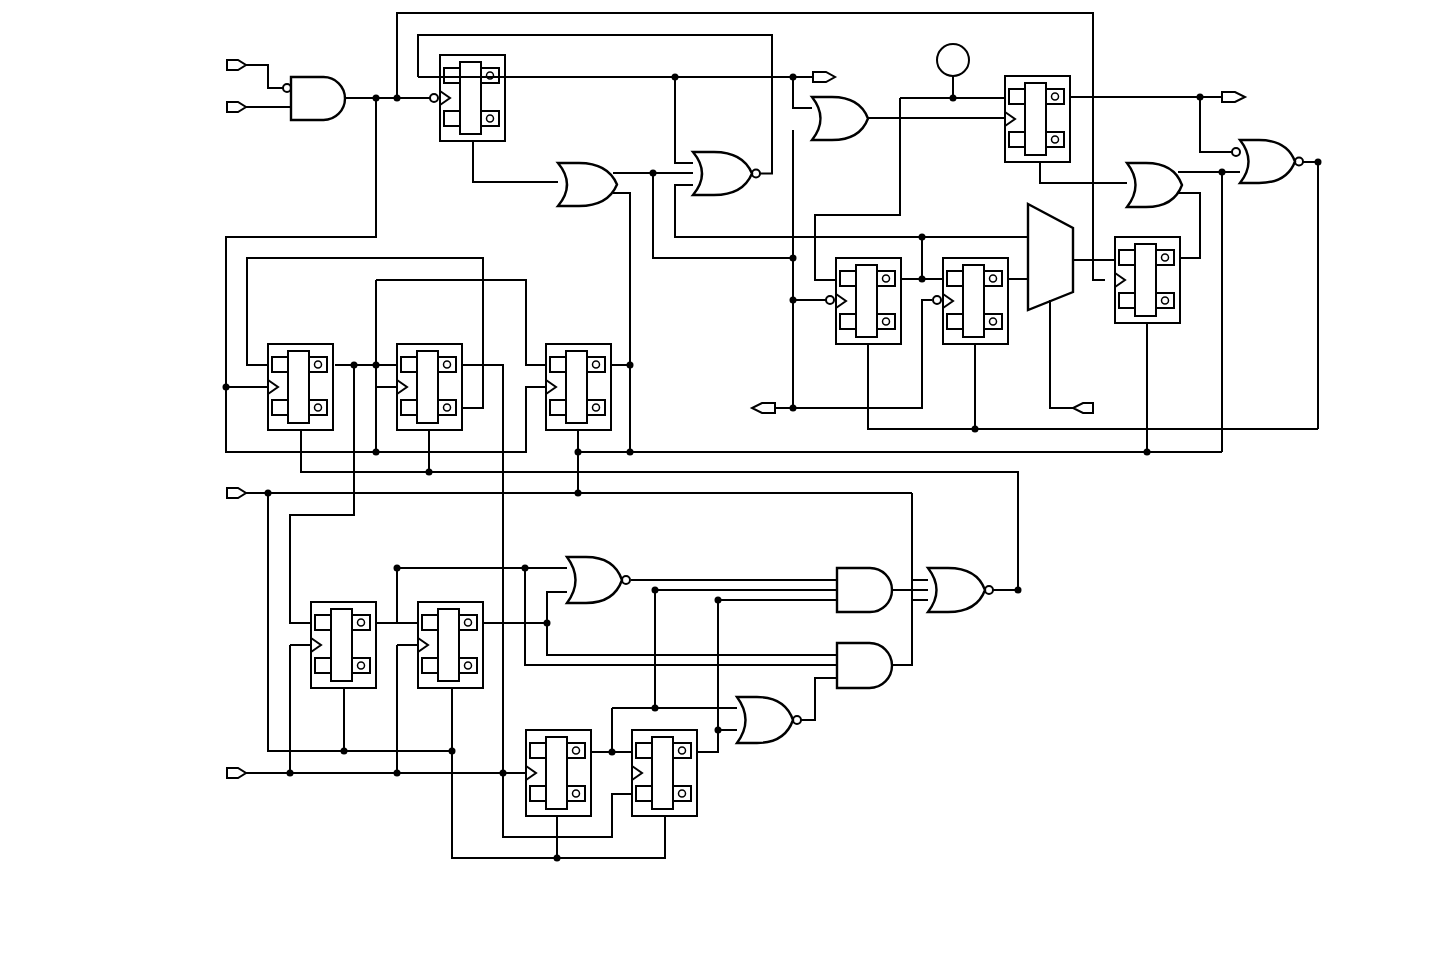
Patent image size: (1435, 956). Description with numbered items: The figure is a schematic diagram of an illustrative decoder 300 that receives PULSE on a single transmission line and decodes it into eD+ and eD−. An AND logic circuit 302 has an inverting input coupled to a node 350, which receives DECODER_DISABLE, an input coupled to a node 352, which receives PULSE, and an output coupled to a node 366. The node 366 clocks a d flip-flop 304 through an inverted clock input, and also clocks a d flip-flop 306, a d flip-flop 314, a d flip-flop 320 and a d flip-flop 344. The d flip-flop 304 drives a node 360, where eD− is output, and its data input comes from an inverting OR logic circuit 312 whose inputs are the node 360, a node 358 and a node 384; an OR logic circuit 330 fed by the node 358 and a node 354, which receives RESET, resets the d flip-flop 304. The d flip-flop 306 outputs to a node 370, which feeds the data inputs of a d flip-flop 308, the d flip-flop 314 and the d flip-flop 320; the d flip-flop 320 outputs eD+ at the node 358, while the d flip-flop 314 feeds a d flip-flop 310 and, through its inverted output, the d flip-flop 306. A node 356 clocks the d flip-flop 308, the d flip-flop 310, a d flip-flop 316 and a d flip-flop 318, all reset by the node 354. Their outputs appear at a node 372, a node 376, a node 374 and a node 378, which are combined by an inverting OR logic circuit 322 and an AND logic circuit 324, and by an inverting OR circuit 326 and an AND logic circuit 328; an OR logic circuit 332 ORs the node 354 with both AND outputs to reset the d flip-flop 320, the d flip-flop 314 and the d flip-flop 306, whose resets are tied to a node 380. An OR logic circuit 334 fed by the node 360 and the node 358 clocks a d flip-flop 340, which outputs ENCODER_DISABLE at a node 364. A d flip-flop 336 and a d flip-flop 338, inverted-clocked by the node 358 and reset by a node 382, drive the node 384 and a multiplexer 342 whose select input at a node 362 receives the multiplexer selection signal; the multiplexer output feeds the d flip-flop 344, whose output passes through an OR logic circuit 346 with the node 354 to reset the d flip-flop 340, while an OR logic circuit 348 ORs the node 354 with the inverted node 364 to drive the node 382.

The decoder 300 is at (1228, 667).
The AND logic circuit 302 is at (313, 73).
The d flip-flop 304 is at (450, 142).
The d flip-flop 306 is at (290, 343).
The d flip-flop 308 is at (327, 690).
The d flip-flop 310 is at (545, 728).
The inverting OR logic circuit 312 is at (720, 150).
The d flip-flop 314 is at (418, 343).
The d flip-flop 316 is at (433, 690).
The d flip-flop 318 is at (688, 820).
The d flip-flop 320 is at (568, 343).
The inverting OR logic circuit 322 is at (595, 556).
The AND logic circuit 324 is at (865, 568).
The inverting OR circuit 326 is at (762, 745).
The AND logic circuit 328 is at (862, 690).
The OR logic circuit 330 is at (590, 160).
The OR logic circuit 332 is at (958, 568).
The OR logic circuit 334 is at (845, 142).
The d flip-flop 336 is at (884, 346).
The d flip-flop 338 is at (1000, 346).
The d flip-flop 340 is at (1055, 76).
The multiplexer 342 is at (1063, 300).
The d flip-flop 344 is at (1168, 324).
The OR logic circuit 346 is at (1160, 162).
The OR logic circuit 348 is at (1267, 185).
The node 350 is at (232, 57).
The node 352 is at (229, 116).
The node 354 is at (230, 501).
The node 356 is at (231, 781).
The node 358 is at (760, 401).
The node 360 is at (820, 70).
The node 362 is at (1092, 402).
The node 364 is at (1233, 90).
The node 366 is at (376, 92).
The node 370 is at (354, 362).
The node 372 is at (393, 566).
The node 374 is at (551, 623).
The node 376 is at (658, 597).
The node 378 is at (722, 606).
The node 380 is at (1022, 595).
The node 382 is at (1323, 158).
The node 384 is at (923, 232).